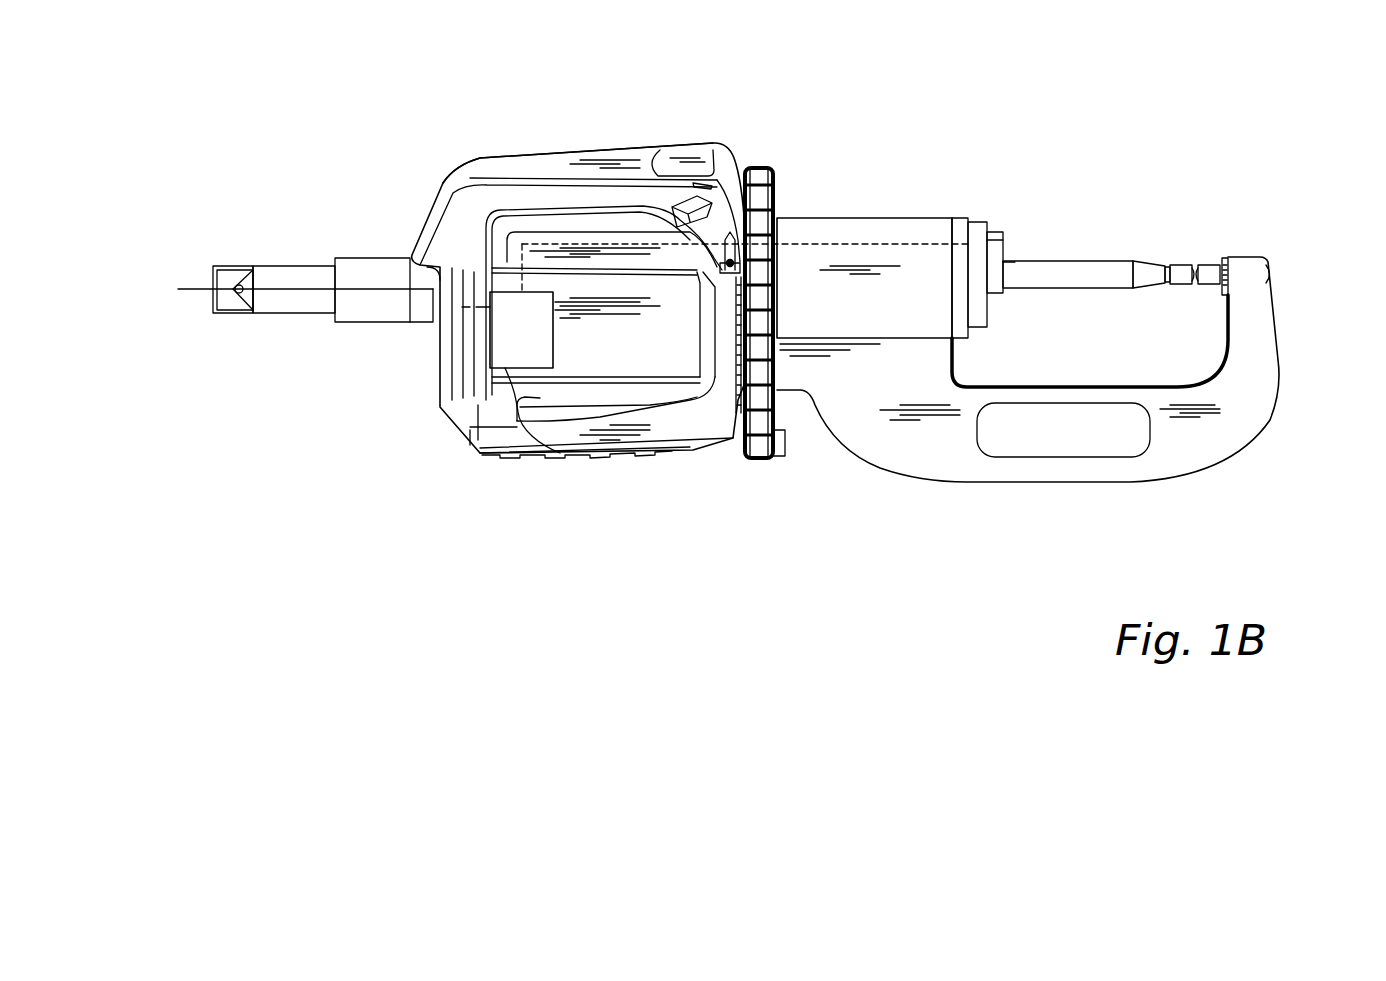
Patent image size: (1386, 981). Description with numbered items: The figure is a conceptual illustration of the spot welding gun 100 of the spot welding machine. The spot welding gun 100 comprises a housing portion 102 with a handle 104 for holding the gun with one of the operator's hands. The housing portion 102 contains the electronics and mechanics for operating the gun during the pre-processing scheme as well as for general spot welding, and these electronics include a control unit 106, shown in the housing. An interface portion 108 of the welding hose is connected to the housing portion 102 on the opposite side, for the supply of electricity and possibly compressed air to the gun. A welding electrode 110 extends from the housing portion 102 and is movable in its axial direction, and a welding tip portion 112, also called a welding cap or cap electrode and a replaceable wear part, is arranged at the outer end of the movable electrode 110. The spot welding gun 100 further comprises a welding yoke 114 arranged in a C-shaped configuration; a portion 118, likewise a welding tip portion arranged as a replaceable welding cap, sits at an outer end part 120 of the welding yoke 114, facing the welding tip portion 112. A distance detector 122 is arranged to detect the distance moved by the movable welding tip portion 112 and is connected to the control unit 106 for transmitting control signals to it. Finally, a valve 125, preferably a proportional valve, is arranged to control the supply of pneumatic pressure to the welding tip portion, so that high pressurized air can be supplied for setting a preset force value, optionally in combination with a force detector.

The spot welding gun 100 is at (572, 590).
The housing portion 102 is at (535, 458).
The handle 104 is at (541, 162).
The control unit 106 is at (500, 368).
The interface portion 108 is at (266, 278).
The welding electrode 110 is at (1093, 262).
The welding tip portion 112 is at (1175, 263).
The welding yoke 114 is at (1140, 467).
The welding tip portion 118 is at (1210, 264).
The outer end part 120 is at (1222, 262).
The distance detector 122 is at (1003, 240).
The valve 125 is at (228, 314).